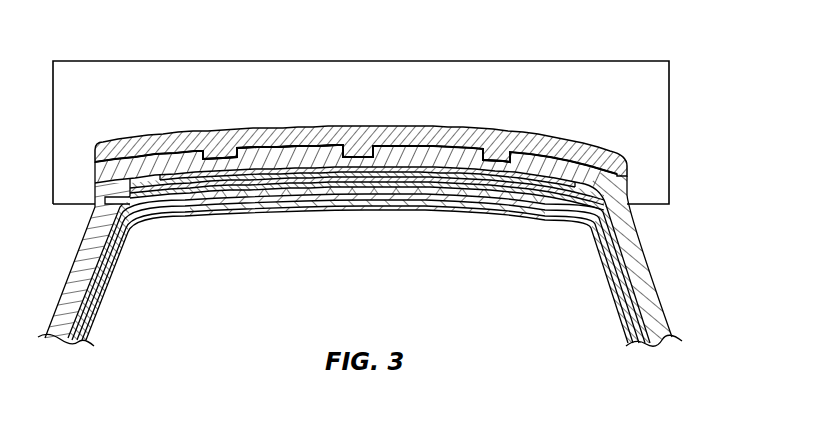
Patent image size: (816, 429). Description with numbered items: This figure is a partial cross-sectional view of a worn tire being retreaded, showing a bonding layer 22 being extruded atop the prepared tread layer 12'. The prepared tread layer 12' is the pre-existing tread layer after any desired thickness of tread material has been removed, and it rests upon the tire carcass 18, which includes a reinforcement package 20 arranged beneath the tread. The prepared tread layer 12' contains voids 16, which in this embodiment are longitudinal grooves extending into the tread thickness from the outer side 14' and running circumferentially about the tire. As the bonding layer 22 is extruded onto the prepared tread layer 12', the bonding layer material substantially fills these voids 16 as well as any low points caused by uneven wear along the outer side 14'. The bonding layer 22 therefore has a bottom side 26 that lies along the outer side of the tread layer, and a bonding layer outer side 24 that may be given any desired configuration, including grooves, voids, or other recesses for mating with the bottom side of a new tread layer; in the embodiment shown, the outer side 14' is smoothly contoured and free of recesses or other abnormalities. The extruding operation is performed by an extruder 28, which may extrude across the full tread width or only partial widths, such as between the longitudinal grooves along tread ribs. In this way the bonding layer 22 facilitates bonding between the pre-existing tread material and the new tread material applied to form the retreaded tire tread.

The extruder 28 is at (625, 75).
The bonding layer outer side 24 is at (553, 135).
The prepared tread layer 12' is at (344, 220).
The outer side of prepared tread layer 14' is at (273, 120).
The bonding layer 22 is at (388, 142).
The voids 16 is at (493, 153).
The bottom side of bonding layer 26 is at (386, 146).
The reinforcement package 20 is at (604, 202).
The tire carcass 18 is at (657, 307).